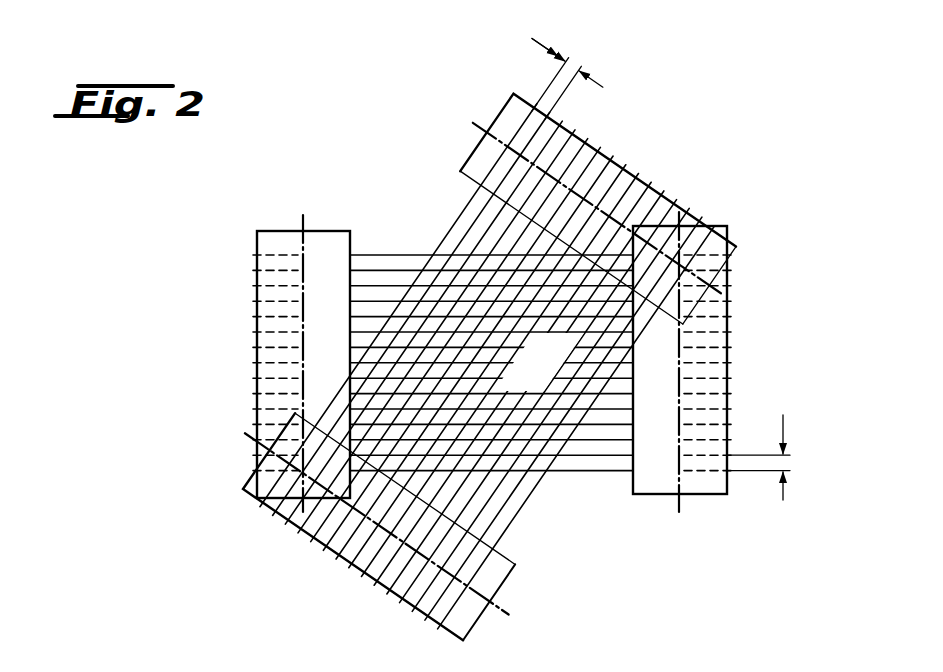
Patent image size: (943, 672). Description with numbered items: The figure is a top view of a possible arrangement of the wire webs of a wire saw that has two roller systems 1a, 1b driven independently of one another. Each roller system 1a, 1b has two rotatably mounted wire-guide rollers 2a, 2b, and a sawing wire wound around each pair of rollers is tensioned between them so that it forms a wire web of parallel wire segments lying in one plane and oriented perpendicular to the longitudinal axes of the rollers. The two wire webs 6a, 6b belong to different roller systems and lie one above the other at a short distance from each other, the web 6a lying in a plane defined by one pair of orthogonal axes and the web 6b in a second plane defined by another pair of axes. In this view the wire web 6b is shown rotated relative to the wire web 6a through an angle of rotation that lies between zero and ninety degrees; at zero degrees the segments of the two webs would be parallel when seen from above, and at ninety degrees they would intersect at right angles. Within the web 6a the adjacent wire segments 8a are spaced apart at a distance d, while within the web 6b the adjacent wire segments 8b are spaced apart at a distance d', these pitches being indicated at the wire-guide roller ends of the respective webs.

The roller system 1a is at (700, 483).
The roller system 1b is at (510, 118).
The wire-guide roller 2a is at (280, 243).
The wire-guide roller 2b is at (472, 608).
The wire web 6a is at (380, 253).
The wire web 6b is at (521, 519).
The wire segments 8a is at (492, 362).
The wire segments 8b is at (487, 366).
The distance between adjacent wire segments d is at (771, 435).
The distance between adjacent wire segments d' is at (563, 71).